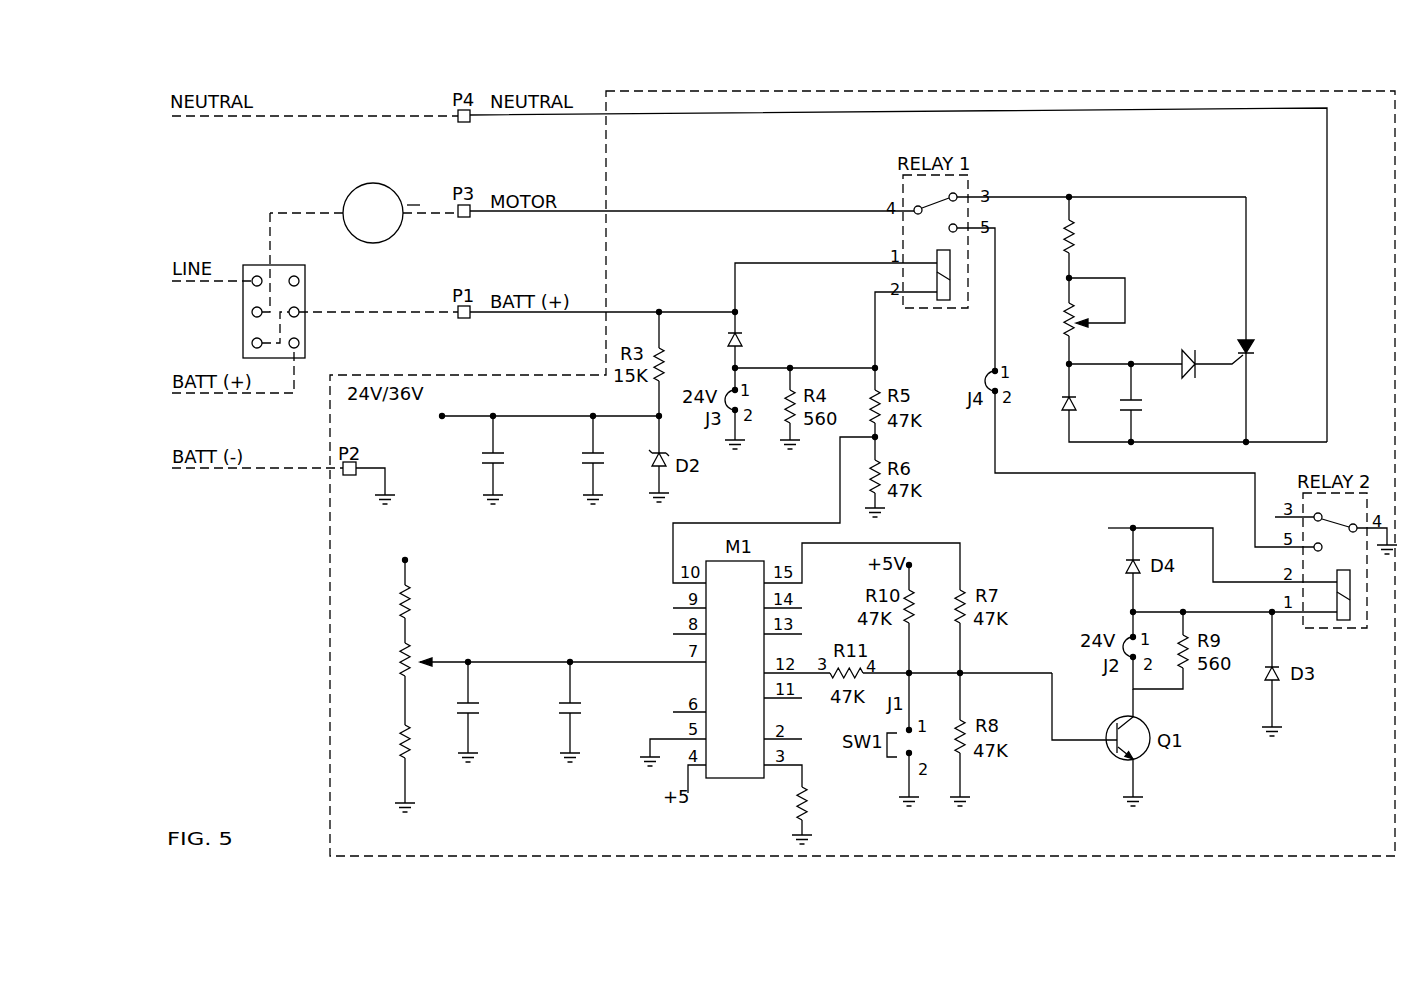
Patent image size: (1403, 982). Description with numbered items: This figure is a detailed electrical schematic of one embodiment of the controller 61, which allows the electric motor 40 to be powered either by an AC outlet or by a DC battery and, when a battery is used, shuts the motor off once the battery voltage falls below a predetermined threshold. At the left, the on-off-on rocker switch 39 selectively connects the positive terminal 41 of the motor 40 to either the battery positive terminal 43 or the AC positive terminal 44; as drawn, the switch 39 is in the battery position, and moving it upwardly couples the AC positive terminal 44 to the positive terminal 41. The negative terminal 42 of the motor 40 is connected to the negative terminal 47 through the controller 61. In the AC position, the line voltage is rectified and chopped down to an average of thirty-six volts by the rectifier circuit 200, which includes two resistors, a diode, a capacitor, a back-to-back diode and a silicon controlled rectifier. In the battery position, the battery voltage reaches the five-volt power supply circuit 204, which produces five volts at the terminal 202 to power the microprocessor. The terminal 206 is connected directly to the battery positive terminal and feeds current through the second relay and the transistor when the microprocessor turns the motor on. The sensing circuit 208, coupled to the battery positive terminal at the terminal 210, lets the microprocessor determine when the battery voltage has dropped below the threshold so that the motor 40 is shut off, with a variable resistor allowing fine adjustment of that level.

The controller 61 is at (700, 90).
The negative terminal 47 is at (464, 122).
The electric motor 40 is at (362, 186).
The positive terminal 41 is at (343, 222).
The negative terminal 42 is at (408, 222).
The AC positive terminal 44 is at (256, 276).
The on-off-on rocker switch 39 is at (312, 288).
The battery positive terminal 43 is at (299, 340).
The rectifier circuit 200 is at (1198, 276).
The terminal 202 is at (442, 416).
The 5-volt power supply circuit 204 is at (582, 400).
The terminal 206 is at (1133, 528).
The sensing circuit 208 is at (550, 601).
The terminal 210 is at (404, 563).